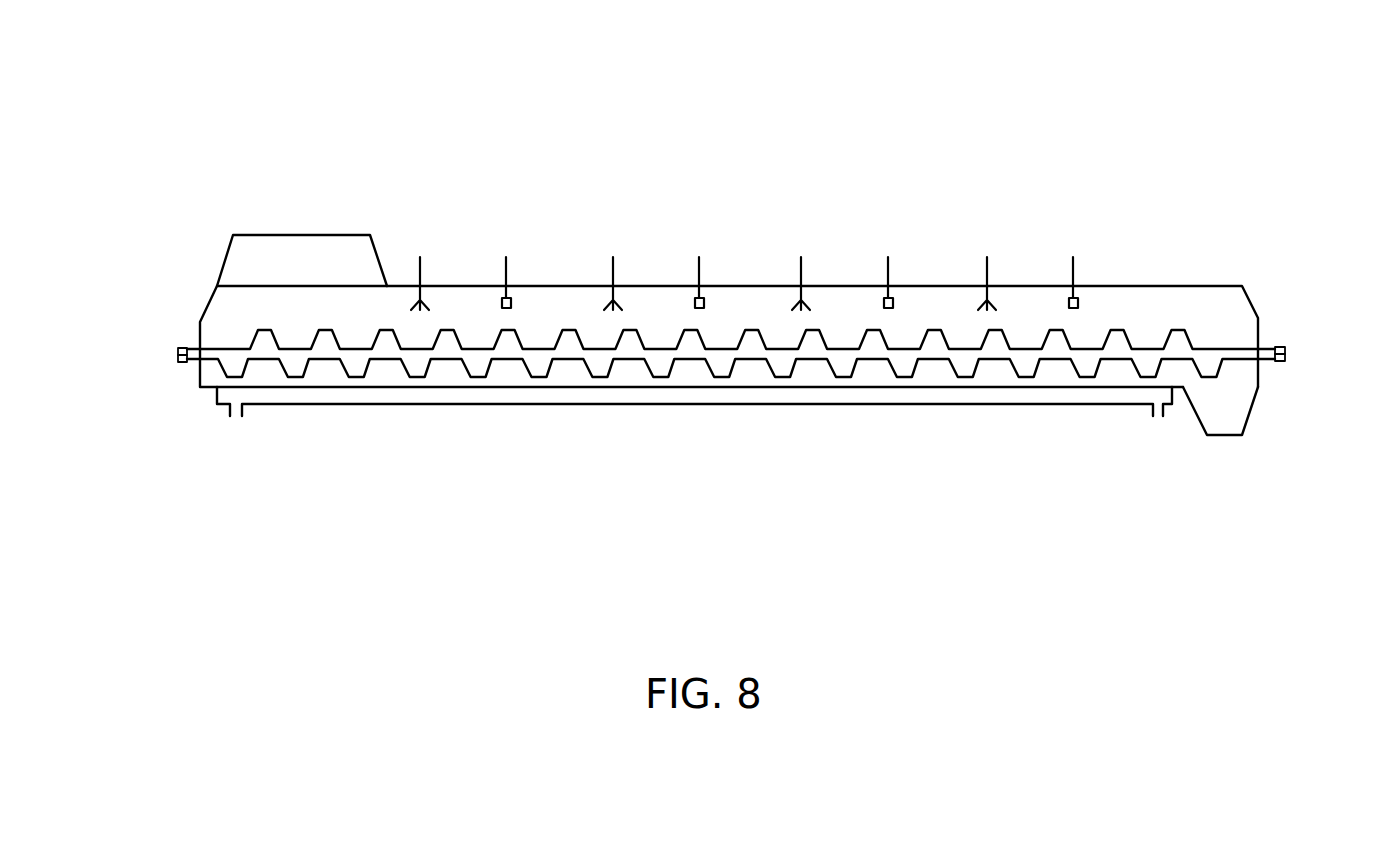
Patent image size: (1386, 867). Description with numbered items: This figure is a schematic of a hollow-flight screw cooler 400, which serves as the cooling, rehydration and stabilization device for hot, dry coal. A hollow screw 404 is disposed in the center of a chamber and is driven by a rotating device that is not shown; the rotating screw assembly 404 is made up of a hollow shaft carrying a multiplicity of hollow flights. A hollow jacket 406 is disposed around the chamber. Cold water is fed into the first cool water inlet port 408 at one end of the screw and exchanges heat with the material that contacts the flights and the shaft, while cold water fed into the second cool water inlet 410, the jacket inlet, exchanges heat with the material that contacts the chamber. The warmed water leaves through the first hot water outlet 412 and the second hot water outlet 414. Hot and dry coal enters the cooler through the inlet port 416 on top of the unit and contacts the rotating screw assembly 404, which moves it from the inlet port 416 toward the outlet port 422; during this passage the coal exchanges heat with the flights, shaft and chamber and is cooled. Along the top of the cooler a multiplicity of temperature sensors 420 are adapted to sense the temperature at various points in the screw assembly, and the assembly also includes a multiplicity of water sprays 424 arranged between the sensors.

The hollow-flight screw cooler 400 is at (722, 112).
The hollow screw 404 is at (353, 377).
The hollow jacket 406 is at (640, 400).
The first cool water inlet port 408 is at (1292, 350).
The second cool water inlet 410 is at (1157, 418).
The first hot water outlet 412 is at (165, 352).
The second hot water outlet 414 is at (233, 422).
The inlet port 416 is at (298, 227).
The temperature sensors 420 is at (513, 266).
The outlet port 422 is at (1223, 442).
The water sprays 424 is at (428, 266).